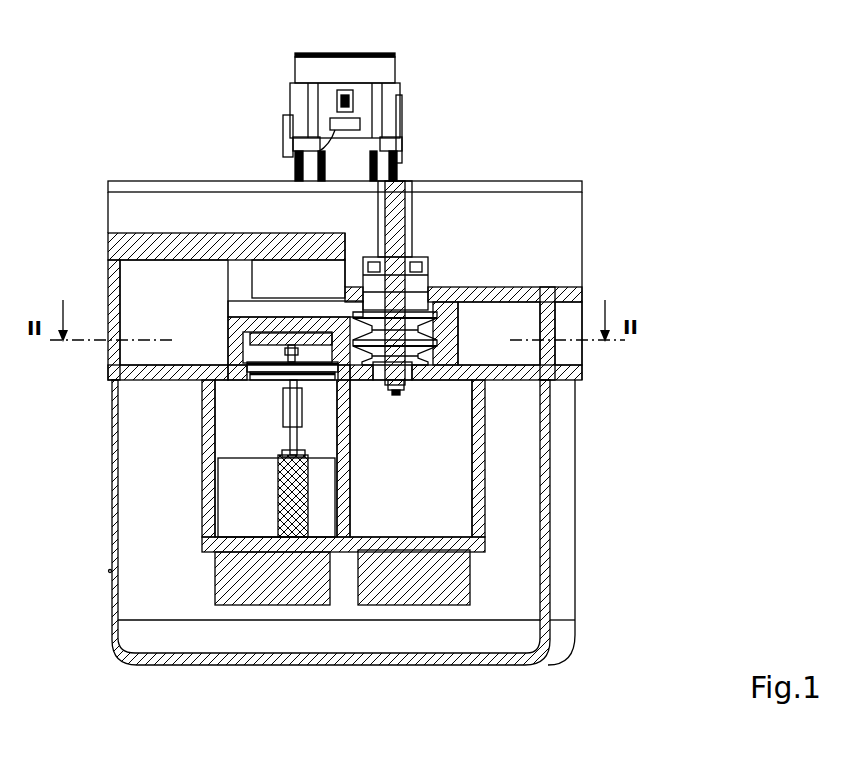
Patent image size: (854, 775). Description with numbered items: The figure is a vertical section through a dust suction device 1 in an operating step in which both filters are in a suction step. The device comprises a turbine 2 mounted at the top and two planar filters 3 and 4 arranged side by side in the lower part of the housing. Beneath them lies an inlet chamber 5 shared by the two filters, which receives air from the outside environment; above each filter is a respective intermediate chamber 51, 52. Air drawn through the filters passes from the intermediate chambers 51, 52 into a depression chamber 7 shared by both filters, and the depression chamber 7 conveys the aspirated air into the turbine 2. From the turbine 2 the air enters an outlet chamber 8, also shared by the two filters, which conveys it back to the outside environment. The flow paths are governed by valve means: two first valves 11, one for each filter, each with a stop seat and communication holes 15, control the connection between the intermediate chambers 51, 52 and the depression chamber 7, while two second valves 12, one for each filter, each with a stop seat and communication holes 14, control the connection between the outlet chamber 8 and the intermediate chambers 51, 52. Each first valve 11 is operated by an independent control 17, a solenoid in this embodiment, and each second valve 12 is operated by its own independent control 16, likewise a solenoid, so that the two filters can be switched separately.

The dust suction device 1 is at (158, 103).
The turbine 2 is at (293, 80).
The planar filter 3 is at (240, 600).
The planar filter 4 is at (442, 587).
The inlet chamber 5 is at (128, 582).
The depression chamber 7 is at (247, 333).
The outlet chamber 8 is at (445, 327).
The first valve 11 is at (267, 343).
The second valve 12 is at (423, 360).
The stop seat and communication holes 14 is at (417, 377).
The stop seat and communication holes 15 is at (213, 390).
The independent control 16 is at (387, 198).
The independent control 17 is at (277, 495).
The intermediate chamber 51 is at (266, 426).
The intermediate chamber 52 is at (429, 476).